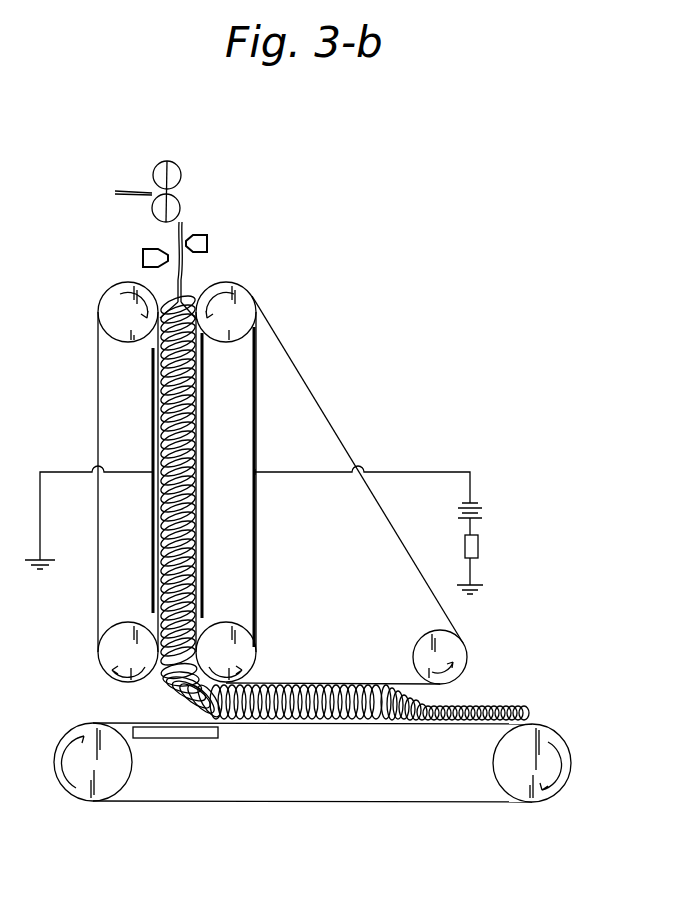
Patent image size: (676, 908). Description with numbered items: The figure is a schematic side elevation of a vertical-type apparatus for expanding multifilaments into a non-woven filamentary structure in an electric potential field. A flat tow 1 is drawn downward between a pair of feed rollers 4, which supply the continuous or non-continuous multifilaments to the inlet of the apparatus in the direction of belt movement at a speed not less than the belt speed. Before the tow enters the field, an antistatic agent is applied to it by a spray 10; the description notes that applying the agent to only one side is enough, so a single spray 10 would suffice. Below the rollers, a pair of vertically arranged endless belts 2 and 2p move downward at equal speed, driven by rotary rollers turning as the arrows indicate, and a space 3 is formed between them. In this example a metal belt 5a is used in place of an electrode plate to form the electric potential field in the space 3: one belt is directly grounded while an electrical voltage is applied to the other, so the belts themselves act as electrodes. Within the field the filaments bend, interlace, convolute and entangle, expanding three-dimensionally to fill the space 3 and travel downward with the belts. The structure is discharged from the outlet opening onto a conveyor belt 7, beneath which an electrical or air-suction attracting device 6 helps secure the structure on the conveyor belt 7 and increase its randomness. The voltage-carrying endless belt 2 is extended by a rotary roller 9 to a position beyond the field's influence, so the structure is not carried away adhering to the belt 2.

The flat tow 1 is at (183, 212).
The endless belt 2 is at (197, 498).
The endless belt 2p is at (160, 405).
The space 3 is at (185, 382).
The feed rollers 4 is at (178, 191).
The metal belt 5a is at (202, 417).
The attracting device 6 is at (197, 738).
The conveyor belt 7 is at (312, 802).
The rotary roller 9 is at (455, 641).
The spray 10 is at (143, 257).